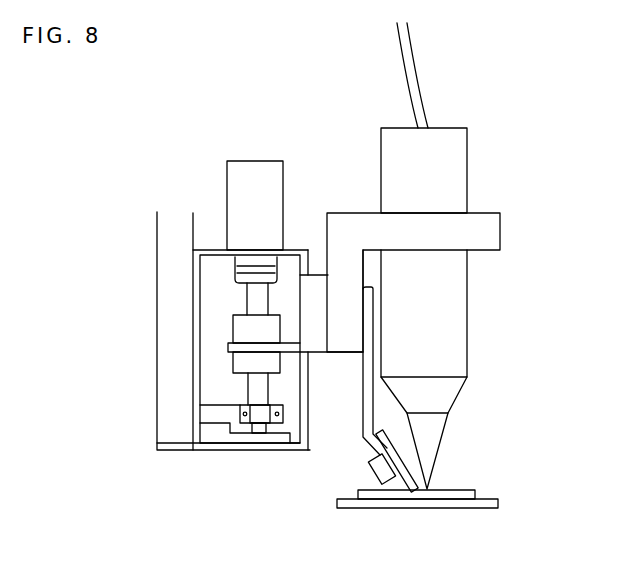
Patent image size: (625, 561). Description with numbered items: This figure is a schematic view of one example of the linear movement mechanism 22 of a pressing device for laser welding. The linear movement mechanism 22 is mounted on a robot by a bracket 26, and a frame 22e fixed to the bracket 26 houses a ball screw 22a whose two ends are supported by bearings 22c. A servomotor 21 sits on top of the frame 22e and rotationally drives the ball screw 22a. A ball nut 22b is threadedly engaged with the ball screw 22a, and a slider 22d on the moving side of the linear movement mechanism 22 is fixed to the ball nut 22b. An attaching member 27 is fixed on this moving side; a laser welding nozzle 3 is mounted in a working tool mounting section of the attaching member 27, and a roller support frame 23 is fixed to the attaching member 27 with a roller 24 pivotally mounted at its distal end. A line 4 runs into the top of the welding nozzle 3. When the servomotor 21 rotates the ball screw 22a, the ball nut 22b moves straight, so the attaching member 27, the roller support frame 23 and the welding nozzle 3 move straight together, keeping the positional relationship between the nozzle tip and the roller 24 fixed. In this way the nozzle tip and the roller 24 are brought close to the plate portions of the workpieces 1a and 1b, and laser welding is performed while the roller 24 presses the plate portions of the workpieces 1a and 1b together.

The workpiece 1a is at (463, 510).
The workpiece 1b is at (463, 490).
The laser welding nozzle 3 is at (462, 357).
The supply tube 4 is at (421, 68).
The servomotor 21 is at (259, 172).
The linear movement mechanism 22 is at (232, 455).
The ball screw 22a is at (250, 303).
The ball nut 22b is at (237, 323).
The bearings 22c is at (240, 420).
The slider 22d is at (320, 275).
The frame 22e is at (212, 453).
The roller support frame 23 is at (363, 405).
The roller 24 is at (367, 447).
The bracket 26 is at (164, 238).
The attaching member 27 is at (500, 232).